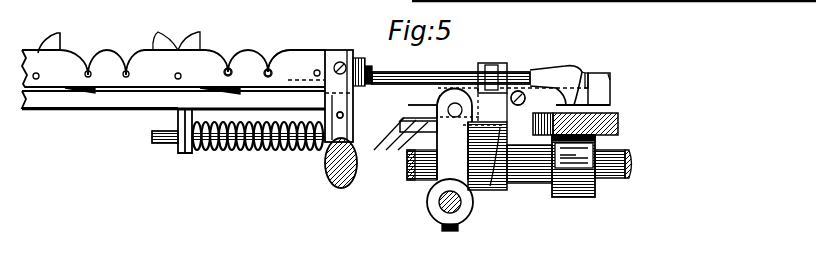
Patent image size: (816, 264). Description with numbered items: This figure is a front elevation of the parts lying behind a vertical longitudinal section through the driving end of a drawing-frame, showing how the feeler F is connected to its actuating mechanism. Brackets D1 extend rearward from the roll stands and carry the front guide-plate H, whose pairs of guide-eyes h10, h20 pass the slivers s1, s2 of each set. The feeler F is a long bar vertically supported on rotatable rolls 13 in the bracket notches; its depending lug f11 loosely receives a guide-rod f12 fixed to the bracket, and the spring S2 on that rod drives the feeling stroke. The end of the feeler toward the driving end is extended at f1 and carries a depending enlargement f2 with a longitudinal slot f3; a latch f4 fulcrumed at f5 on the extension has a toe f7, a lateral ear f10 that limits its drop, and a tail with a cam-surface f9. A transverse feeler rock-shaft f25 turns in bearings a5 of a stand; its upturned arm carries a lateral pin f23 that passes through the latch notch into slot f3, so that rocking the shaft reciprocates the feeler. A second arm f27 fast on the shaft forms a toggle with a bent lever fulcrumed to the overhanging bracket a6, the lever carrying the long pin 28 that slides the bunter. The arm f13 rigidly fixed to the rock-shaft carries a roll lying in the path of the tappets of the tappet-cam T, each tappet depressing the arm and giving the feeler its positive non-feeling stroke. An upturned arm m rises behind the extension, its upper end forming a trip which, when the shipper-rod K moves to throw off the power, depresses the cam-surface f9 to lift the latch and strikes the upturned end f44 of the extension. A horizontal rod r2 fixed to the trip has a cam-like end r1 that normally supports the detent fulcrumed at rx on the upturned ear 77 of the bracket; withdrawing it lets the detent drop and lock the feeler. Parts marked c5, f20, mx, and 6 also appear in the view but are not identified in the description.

The front guide-plate H is at (25, 66).
The pawl fin c5 is at (57, 33).
The bearings a5 is at (154, 35).
The guide-eye h10 is at (227, 70).
The sliver s2 is at (230, 68).
The sliver s1 is at (262, 56).
The guide-eye h20 is at (272, 68).
The feeler F is at (66, 140).
The depending lug f11 is at (176, 154).
The guide-rod f12 is at (226, 150).
The frame slot f20 is at (324, 97).
The rotatable rolls 13 is at (324, 115).
The tappet-cam T is at (360, 50).
The cam-like end r1 is at (308, 76).
The upturned ear 77 is at (354, 118).
The bracket D1 is at (334, 177).
The horizontal rod r2 is at (470, 72).
The fulcrum rx is at (418, 110).
The arm f13 is at (513, 12).
The longitudinal slot f3 is at (435, 98).
The lateral ear f10 is at (418, 118).
The depending enlargement f2 is at (429, 139).
The toe f7 is at (389, 132).
The lateral pin f23 is at (429, 182).
The upturned arm f27 is at (447, 163).
The feeler rock-shaft f25 is at (445, 208).
The latch f4 is at (507, 125).
The shaft section mx is at (490, 193).
The upturned arm m is at (578, 88).
The shipper-rod K is at (632, 163).
The feeler extension f1 is at (547, 65).
The cam-surface f9 is at (611, 88).
The fulcrum f5 is at (585, 67).
The upturned end f44 is at (610, 76).
The screw 6 is at (532, 2).
The lateral pin 28 is at (556, 2).
The bracket a6 is at (586, 254).